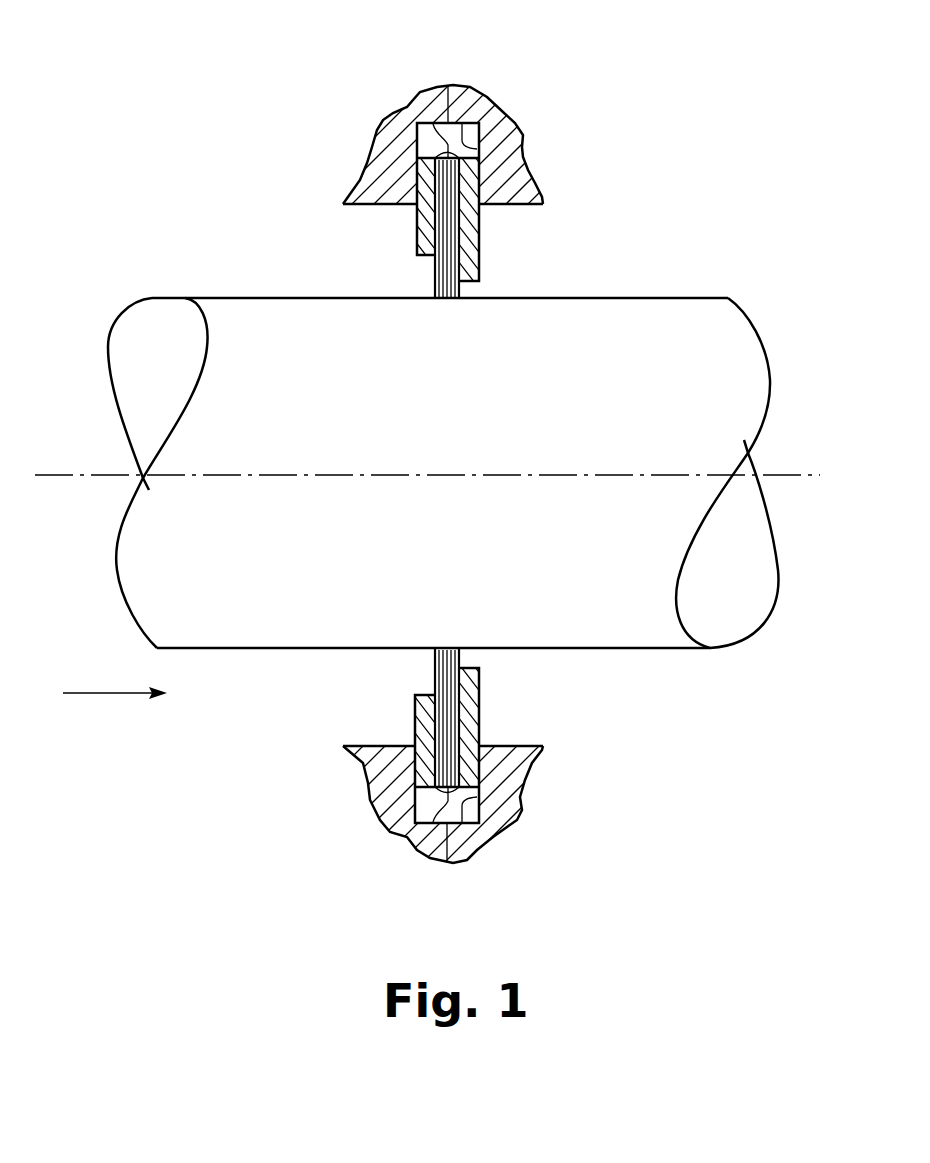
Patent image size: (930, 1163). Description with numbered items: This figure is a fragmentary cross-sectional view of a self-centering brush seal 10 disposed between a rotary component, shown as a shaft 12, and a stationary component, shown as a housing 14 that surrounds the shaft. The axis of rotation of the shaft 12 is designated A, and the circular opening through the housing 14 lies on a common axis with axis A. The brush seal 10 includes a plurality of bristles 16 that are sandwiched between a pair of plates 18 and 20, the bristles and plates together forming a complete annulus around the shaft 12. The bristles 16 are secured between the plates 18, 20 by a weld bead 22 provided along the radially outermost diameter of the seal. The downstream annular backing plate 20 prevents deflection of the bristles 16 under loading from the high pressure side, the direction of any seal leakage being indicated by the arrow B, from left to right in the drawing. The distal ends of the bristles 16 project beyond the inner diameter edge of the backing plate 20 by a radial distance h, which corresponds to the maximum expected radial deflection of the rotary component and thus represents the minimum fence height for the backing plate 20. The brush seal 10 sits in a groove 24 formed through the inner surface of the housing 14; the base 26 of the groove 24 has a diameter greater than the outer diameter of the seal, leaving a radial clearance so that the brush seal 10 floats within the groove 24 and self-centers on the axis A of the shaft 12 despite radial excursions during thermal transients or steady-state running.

The brush seal 10 is at (368, 249).
The shaft 12 is at (173, 325).
The housing 14 is at (390, 147).
The bristles 16 is at (436, 661).
The plate 18 is at (415, 720).
The backing plate 20 is at (480, 697).
The weld bead 22 is at (417, 110).
The groove 24 is at (427, 823).
The base of the groove 26 is at (470, 148).
The radial distance h is at (458, 656).
The axis of rotation A is at (788, 477).
The arrow B is at (93, 693).